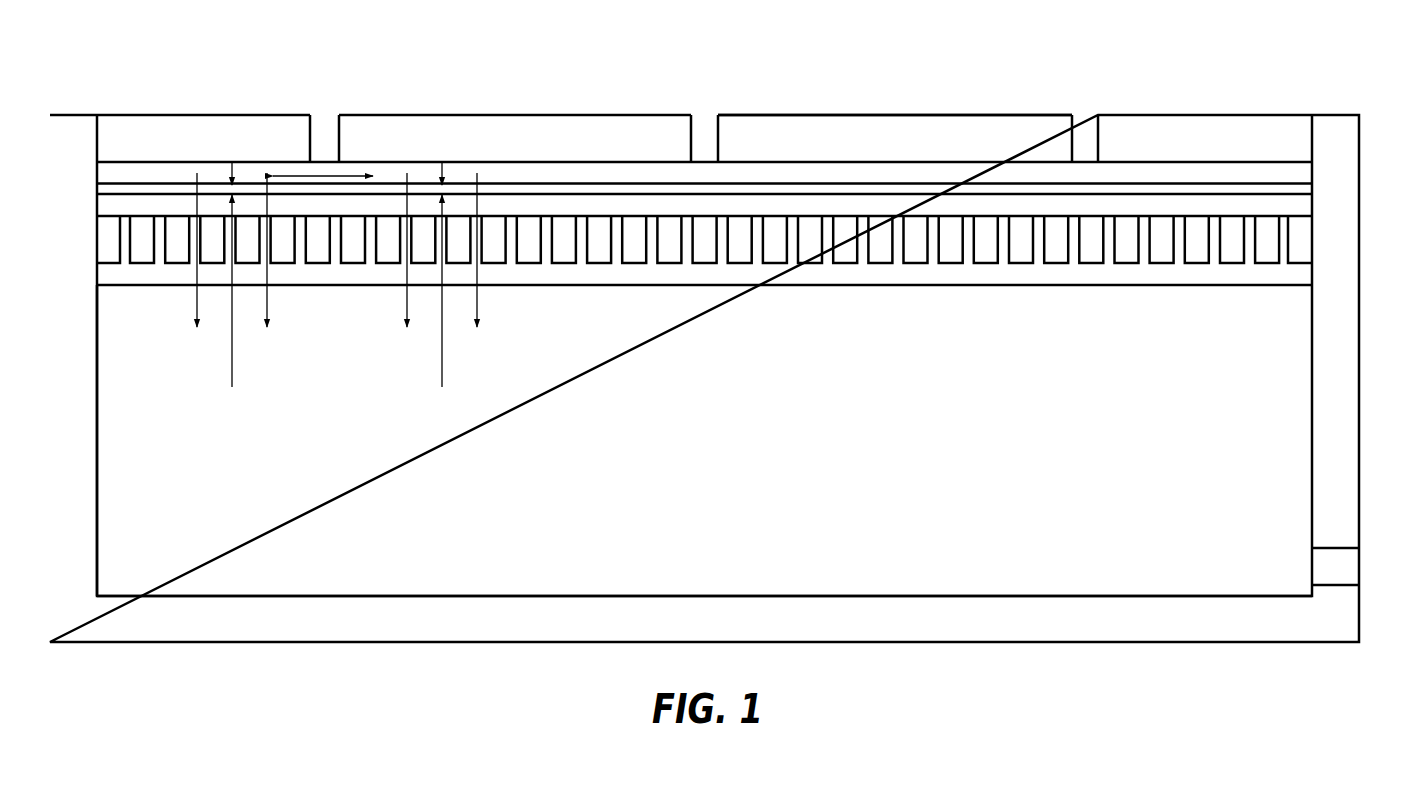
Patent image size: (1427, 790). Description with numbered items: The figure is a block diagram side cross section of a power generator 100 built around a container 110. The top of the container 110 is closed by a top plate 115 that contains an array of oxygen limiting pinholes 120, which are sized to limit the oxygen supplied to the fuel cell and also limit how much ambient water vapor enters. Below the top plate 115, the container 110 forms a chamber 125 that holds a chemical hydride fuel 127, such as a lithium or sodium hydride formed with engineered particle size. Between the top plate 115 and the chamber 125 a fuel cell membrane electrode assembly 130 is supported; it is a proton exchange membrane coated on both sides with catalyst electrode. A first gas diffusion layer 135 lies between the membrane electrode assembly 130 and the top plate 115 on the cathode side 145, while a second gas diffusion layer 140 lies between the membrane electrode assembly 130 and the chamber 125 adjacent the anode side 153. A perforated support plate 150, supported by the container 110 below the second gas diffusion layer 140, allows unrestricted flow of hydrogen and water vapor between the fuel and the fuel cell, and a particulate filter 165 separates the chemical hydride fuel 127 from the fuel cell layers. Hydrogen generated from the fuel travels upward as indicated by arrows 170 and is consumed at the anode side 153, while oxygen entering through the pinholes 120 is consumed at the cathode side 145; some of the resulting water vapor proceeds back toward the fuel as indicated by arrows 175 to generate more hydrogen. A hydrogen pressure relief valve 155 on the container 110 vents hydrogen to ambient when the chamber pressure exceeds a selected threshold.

The power generator 100 is at (1270, 54).
The container 110 is at (1360, 377).
The top plate 115 is at (893, 112).
The oxygen limiting pinholes 120 is at (325, 125).
The chamber 125 is at (97, 432).
The chemical hydride fuel 127 is at (1058, 558).
The fuel cell membrane electrode assembly 130 is at (1252, 183).
The first gas diffusion layer 135 is at (1303, 175).
The second gas diffusion layer 140 is at (1303, 206).
The cathode side 145 is at (525, 183).
The perforated support plate 150 is at (1088, 248).
The anode side 153 is at (122, 197).
The hydrogen pressure relief valve 155 is at (1335, 546).
The particulate filter 165 is at (860, 287).
The arrows indicating hydrogen transport 170 is at (232, 377).
The arrows indicating water vapor flow 175 is at (197, 304).